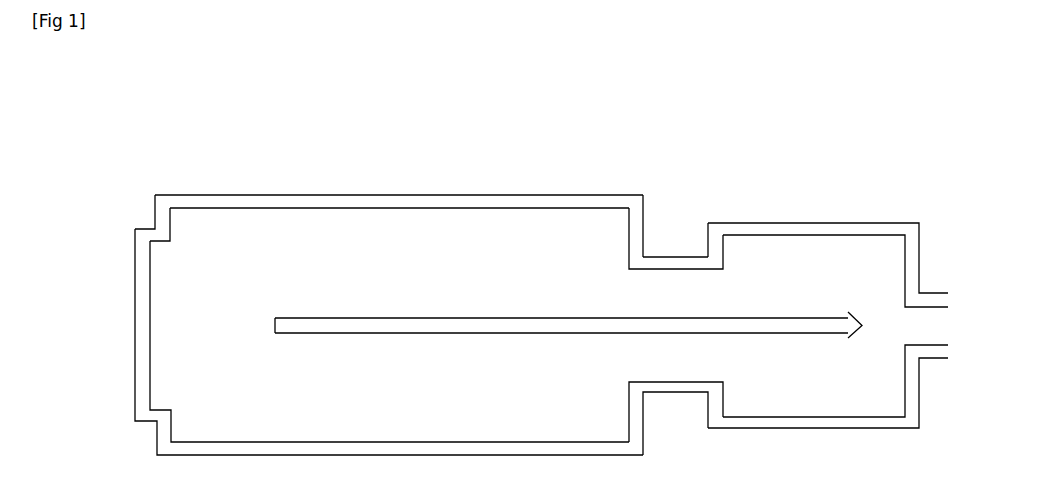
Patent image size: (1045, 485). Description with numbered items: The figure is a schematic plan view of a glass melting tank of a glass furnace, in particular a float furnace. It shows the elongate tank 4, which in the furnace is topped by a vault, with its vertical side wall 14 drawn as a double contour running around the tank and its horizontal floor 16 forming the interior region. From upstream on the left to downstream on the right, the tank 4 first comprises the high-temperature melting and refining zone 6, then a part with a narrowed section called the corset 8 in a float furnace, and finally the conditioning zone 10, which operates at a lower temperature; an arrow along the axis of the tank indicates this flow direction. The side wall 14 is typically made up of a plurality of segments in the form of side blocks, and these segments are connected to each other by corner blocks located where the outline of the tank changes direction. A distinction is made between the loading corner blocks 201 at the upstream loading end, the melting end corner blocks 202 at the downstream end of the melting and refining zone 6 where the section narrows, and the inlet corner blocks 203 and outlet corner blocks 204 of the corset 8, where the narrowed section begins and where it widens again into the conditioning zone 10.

The tank 4 is at (728, 105).
The melting and refining zone 6 is at (290, 174).
The corset 8 is at (692, 203).
The conditioning zone 10 is at (835, 213).
The side wall 14 is at (415, 203).
The floor 16 is at (472, 228).
The loading corner blocks 201 is at (165, 230).
The melting end corner blocks 202 is at (635, 195).
The inlet corner blocks 203 is at (638, 259).
The outlet corner blocks 204 is at (712, 232).